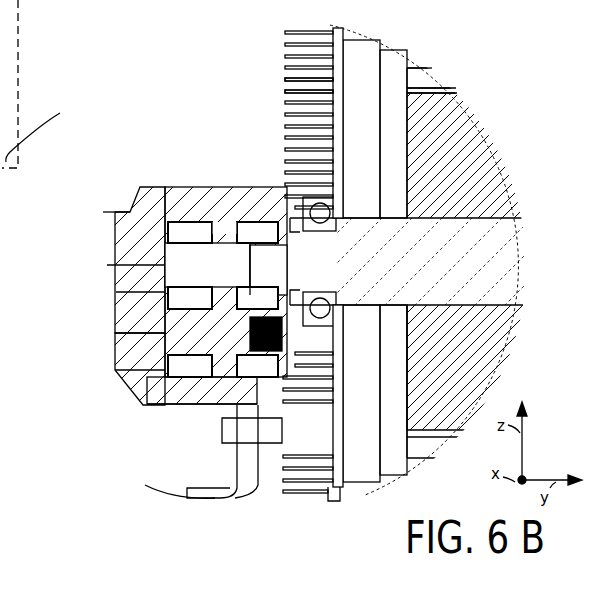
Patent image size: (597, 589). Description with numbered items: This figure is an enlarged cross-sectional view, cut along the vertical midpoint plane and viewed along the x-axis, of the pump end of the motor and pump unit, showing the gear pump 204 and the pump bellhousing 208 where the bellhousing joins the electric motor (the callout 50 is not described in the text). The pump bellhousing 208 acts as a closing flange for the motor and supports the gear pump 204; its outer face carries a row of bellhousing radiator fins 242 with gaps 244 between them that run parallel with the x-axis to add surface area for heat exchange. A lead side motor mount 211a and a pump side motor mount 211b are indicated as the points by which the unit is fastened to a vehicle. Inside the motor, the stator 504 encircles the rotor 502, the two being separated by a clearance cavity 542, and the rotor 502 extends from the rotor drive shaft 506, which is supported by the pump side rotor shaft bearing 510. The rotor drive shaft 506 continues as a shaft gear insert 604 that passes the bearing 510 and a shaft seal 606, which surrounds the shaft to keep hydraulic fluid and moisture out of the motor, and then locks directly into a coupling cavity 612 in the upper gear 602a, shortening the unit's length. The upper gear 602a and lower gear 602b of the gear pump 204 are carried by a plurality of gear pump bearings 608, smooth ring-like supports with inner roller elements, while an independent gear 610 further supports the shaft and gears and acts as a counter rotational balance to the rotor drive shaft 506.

The electric motor 50 is at (118, 292).
The gear pump 204 is at (360, 498).
The pump bellhousing 208 is at (282, 27).
The lead side motor mount 211a is at (63, 125).
The pump side motor mount 211b is at (153, 478).
The bellhousing radiator fins 242 is at (285, 88).
The gaps 244 is at (287, 90).
The rotor 502 is at (482, 163).
The stator 504 is at (432, 83).
The rotor drive shaft 506 is at (465, 258).
The pump side rotor shaft bearing 510 is at (312, 205).
The clearance cavity 542 is at (457, 93).
The upper gear 602a is at (108, 260).
The lower gear 602b is at (118, 337).
The shaft gear insert 604 is at (415, 261).
The shaft seal 606 is at (283, 186).
The gear pump bearings 608 is at (225, 225).
The independent gear 610 is at (280, 332).
The coupling cavity 612 is at (250, 270).